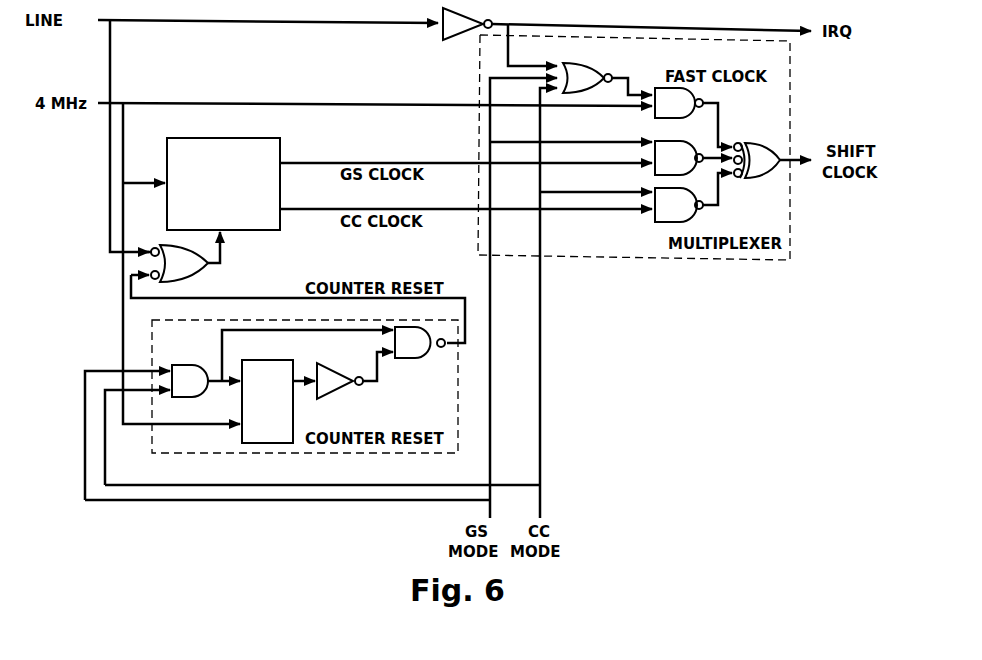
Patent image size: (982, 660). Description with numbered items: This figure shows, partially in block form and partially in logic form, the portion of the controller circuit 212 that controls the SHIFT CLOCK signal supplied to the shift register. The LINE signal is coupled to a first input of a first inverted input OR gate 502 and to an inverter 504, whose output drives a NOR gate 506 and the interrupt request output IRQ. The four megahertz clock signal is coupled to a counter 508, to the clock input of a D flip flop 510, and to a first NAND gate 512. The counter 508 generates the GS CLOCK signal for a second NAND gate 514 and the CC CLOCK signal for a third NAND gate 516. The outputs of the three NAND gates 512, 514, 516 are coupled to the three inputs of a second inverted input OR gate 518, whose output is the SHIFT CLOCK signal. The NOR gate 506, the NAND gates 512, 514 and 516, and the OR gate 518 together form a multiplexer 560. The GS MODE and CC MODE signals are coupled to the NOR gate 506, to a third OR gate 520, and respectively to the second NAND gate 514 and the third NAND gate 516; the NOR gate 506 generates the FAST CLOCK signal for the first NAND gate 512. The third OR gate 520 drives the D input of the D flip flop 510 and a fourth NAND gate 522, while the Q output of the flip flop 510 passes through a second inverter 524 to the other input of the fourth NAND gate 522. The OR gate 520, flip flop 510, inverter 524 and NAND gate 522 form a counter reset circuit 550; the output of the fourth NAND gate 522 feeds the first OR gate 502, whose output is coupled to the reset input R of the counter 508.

The controller circuit 212 is at (448, 269).
The first inverted input OR gate 502 is at (208, 272).
The inverter 504 is at (446, 44).
The NOR gate 506 is at (598, 49).
The counter 508 is at (215, 121).
The D flip flop 510 is at (250, 453).
The first NAND gate 512 is at (645, 122).
The second NAND gate 514 is at (645, 172).
The third NAND gate 516 is at (645, 225).
The second inverted input OR gate 518 is at (757, 176).
The third OR gate 520 is at (186, 356).
The fourth NAND gate 522 is at (421, 359).
The second inverter 524 is at (312, 400).
The counter reset circuit 550 is at (385, 455).
The multiplexer 560 is at (633, 263).